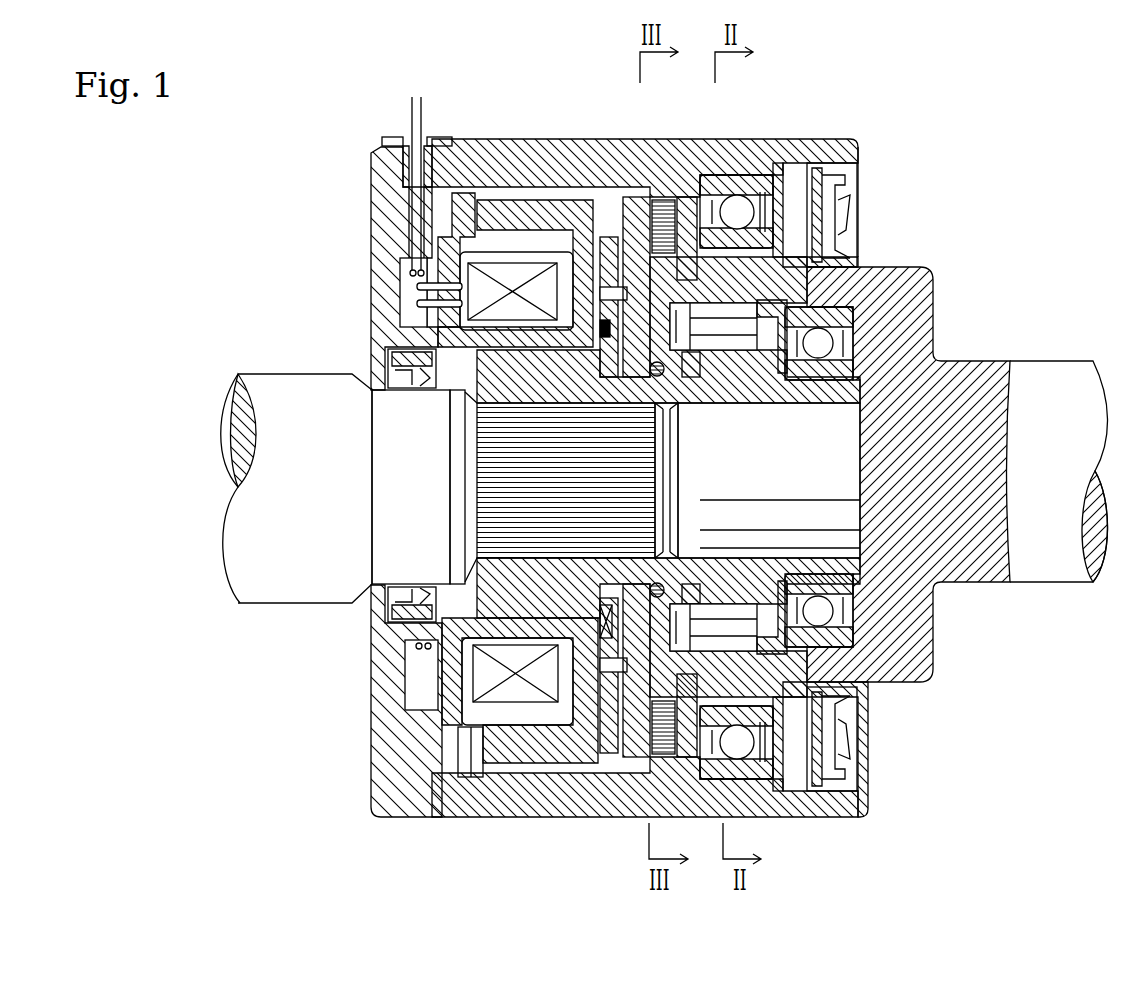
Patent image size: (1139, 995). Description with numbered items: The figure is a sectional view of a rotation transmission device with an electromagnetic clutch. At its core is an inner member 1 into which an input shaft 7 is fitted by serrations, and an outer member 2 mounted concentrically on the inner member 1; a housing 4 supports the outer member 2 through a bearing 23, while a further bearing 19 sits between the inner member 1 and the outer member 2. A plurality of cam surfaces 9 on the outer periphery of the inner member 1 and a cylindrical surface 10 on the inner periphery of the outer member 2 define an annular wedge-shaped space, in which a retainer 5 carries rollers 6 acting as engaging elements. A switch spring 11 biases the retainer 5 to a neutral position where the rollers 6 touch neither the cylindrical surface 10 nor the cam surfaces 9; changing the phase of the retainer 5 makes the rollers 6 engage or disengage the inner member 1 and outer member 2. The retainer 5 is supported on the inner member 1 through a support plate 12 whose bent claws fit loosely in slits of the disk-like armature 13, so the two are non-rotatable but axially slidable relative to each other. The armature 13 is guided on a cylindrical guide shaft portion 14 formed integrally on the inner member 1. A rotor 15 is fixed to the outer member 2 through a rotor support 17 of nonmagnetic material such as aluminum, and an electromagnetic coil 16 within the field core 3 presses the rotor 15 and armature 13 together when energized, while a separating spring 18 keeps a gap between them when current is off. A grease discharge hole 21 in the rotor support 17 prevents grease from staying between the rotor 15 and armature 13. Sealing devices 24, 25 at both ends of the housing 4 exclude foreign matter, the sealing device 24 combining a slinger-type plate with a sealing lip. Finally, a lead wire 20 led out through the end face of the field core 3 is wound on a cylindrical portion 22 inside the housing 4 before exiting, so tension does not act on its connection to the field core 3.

The inner member 1 is at (768, 370).
The outer member 2 is at (915, 305).
The field core 3 is at (452, 263).
The housing 4 is at (382, 205).
The retainer 5 is at (866, 267).
The rollers 6 is at (725, 322).
The input shaft 7 is at (302, 417).
The cam surfaces 9 is at (690, 352).
The cylindrical surface 10 is at (682, 300).
The switch spring 11 is at (666, 400).
The support plate 12 is at (618, 207).
The armature 13 is at (608, 139).
The guide shaft portion 14 is at (530, 393).
The rotor 15 is at (568, 139).
The electromagnetic coil 16 is at (493, 140).
The rotor support 17 is at (523, 139).
The separating spring 18 is at (582, 139).
The bearing 19 is at (853, 327).
The lead wire 20 is at (415, 117).
The grease discharge hole 21 is at (627, 139).
The cylindrical portion 22 is at (410, 320).
The bearing 23 is at (753, 167).
The sealing device 24 is at (825, 198).
The sealing device 25 is at (410, 370).